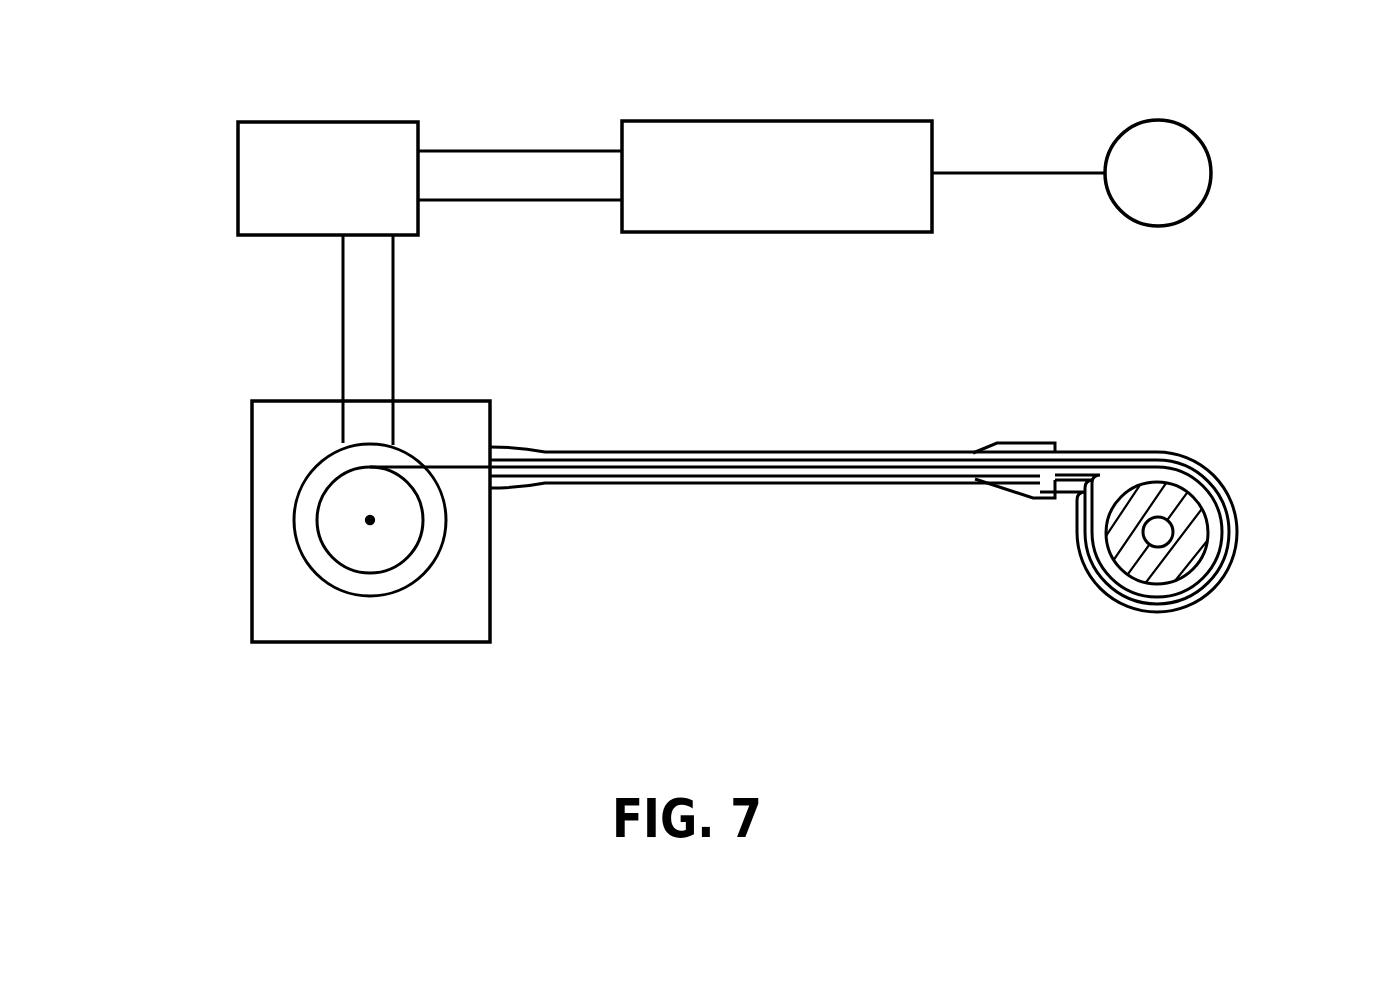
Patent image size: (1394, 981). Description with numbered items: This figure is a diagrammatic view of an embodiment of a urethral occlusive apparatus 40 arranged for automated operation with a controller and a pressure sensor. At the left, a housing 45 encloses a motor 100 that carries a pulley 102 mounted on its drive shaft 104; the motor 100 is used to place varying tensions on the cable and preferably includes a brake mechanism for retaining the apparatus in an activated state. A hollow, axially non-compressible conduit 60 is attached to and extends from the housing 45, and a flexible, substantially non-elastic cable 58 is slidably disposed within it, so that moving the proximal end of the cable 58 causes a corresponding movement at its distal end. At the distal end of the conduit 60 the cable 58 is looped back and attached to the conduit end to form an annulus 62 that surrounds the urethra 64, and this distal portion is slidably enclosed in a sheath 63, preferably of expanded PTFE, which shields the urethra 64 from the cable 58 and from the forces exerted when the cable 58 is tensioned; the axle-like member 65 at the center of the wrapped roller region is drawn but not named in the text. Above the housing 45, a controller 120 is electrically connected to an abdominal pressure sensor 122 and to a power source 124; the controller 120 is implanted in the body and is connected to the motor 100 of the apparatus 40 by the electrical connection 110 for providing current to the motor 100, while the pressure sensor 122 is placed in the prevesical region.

The urethral apparatus 40 is at (188, 422).
The housing 45 is at (252, 540).
The cable 58 is at (1200, 470).
The conduit 60 is at (763, 452).
The annulus 62 is at (1232, 500).
The sheath 63 is at (1237, 525).
The urethra 64 is at (1197, 547).
The axle 65 is at (1157, 537).
The motor 100 is at (312, 567).
The pulley 102 is at (395, 547).
The drive shaft 104 is at (370, 520).
The electrical conduit 110 is at (393, 310).
The controller 120 is at (903, 128).
The abdominal pressure sensor 122 is at (1200, 174).
The power source 124 is at (398, 130).